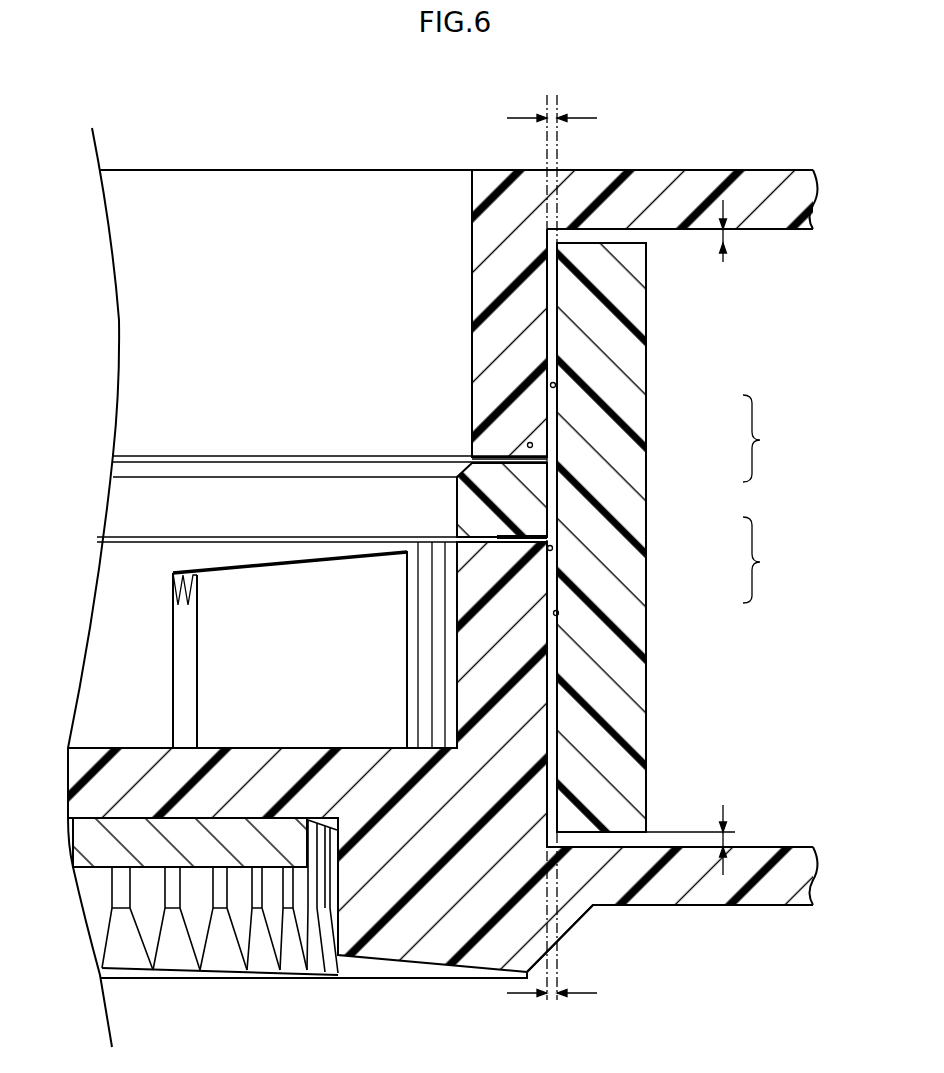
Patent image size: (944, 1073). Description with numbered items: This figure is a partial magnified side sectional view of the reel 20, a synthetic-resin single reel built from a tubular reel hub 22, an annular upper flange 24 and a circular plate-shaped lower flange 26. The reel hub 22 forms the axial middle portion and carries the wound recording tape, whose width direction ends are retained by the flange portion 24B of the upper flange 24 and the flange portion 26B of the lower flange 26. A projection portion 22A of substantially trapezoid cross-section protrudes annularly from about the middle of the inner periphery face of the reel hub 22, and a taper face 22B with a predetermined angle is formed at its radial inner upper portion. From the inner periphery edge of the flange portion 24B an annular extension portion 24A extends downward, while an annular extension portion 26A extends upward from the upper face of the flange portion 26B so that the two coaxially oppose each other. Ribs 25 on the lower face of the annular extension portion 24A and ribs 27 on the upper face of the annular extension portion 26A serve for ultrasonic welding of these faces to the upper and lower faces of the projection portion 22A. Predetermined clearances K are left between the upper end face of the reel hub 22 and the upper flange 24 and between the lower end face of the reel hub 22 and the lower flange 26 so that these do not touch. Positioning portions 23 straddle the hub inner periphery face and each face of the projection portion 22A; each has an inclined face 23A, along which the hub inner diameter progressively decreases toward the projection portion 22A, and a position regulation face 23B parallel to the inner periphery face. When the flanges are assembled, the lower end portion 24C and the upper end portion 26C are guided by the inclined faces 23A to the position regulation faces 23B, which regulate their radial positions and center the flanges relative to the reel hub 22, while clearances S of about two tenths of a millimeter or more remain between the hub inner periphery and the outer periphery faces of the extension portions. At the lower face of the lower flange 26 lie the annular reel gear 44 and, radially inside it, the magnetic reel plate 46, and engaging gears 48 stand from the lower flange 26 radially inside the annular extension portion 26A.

The reel 20 is at (341, 146).
The reel hub 22 is at (650, 366).
The projection portion 22A is at (462, 510).
The taper face 22B is at (463, 458).
The positioning portion 23 is at (769, 499).
The inclined face 23A is at (553, 385).
The position regulation face 23B is at (530, 445).
The upper flange 24 is at (780, 168).
The annular extension portion 24A is at (478, 290).
The flange portion 24B is at (702, 180).
The lower end portion 24C is at (533, 468).
The ribs for welding 25 is at (500, 445).
The lower flange 26 is at (782, 905).
The annular extension portion 26A is at (483, 642).
The flange portion 26B is at (700, 905).
The upper end portion 26C is at (468, 557).
The ribs for welding 27 is at (463, 556).
The reel gear 44 is at (220, 957).
The reel plate 46 is at (98, 845).
The engaging gear 48 is at (250, 603).
The clearance S is at (549, 116).
The clearance K is at (733, 237).